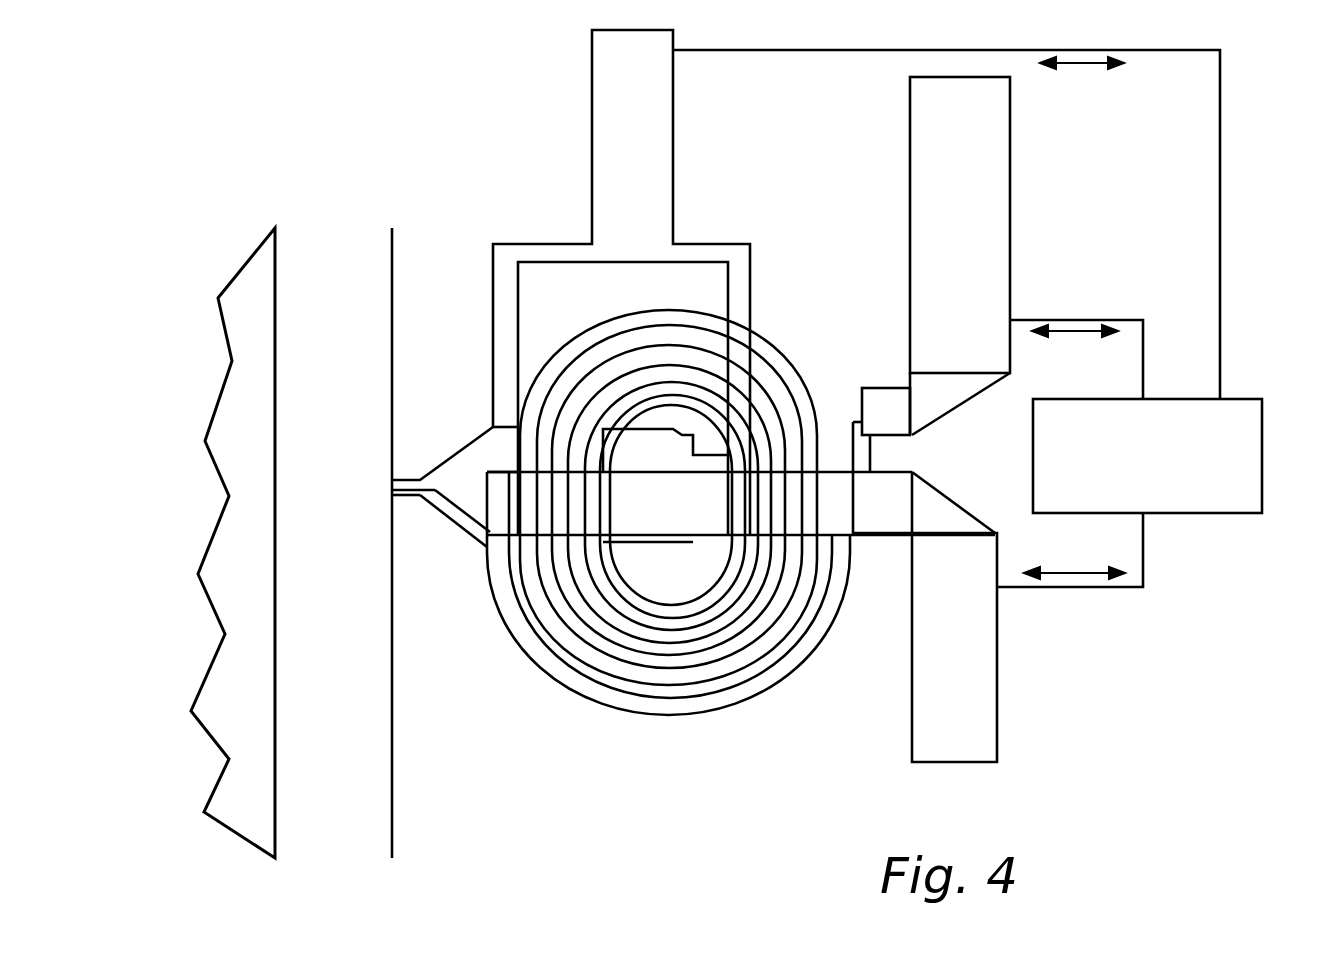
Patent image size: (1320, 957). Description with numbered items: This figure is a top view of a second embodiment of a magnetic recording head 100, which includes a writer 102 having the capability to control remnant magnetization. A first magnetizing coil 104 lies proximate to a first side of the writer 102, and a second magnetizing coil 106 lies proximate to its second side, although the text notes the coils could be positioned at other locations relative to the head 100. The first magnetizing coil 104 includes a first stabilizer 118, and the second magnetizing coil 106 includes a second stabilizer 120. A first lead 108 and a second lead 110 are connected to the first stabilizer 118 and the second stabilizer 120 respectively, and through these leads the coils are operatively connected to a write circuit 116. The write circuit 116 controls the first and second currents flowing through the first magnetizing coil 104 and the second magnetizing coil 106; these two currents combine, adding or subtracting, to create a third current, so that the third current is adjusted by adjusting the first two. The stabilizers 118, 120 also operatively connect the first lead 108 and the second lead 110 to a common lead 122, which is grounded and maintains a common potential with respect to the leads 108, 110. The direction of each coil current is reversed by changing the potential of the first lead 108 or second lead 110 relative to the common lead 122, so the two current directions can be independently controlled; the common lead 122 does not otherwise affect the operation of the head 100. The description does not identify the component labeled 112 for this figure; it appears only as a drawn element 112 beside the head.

The magnetic recording head 100 is at (316, 158).
The writer 102 is at (439, 468).
The first magnetizing coil 104 is at (490, 582).
The second magnetizing coil 106 is at (868, 455).
The first lead 108 is at (997, 715).
The second lead 110 is at (1012, 280).
The magnetic medium 112 is at (275, 585).
The write circuit 116 is at (1183, 514).
The first stabilizer 118 is at (713, 540).
The second stabilizer 120 is at (705, 455).
The common lead 122 is at (592, 167).